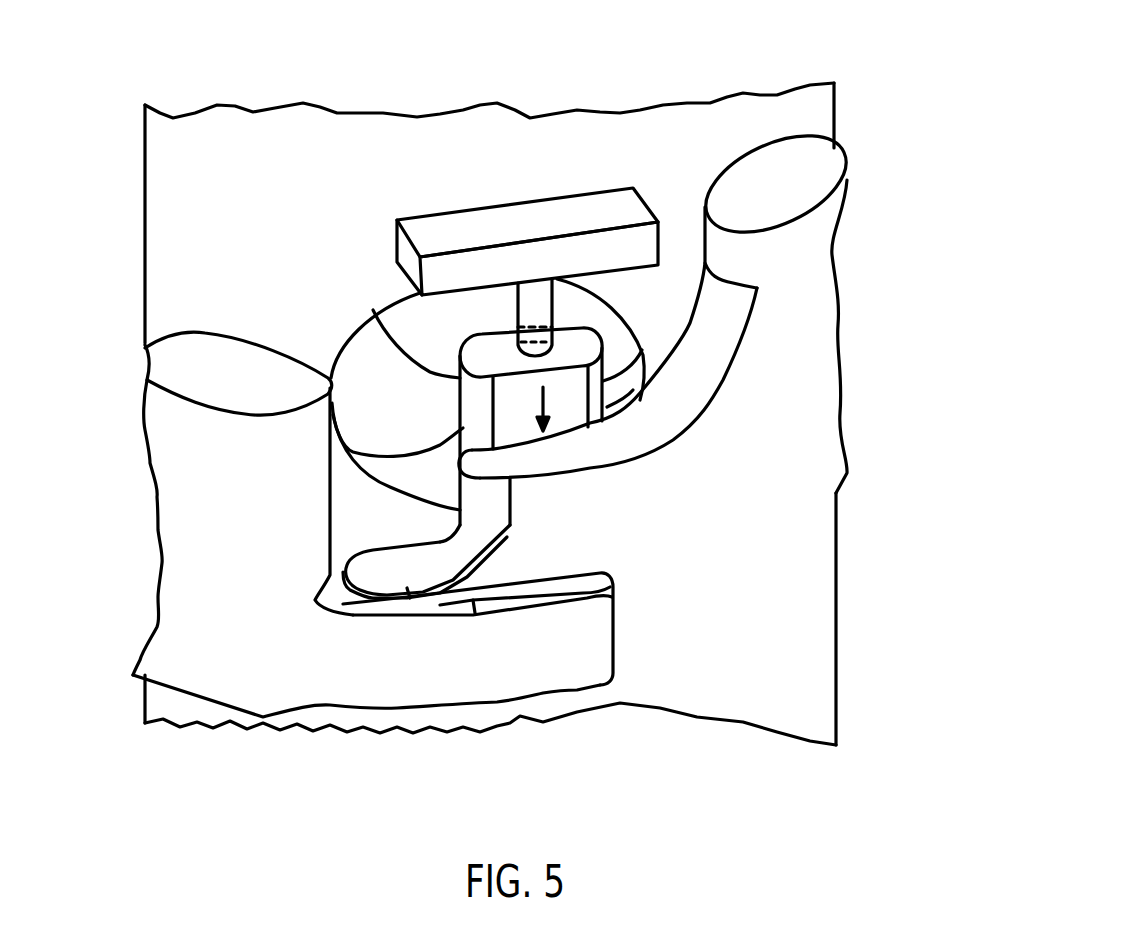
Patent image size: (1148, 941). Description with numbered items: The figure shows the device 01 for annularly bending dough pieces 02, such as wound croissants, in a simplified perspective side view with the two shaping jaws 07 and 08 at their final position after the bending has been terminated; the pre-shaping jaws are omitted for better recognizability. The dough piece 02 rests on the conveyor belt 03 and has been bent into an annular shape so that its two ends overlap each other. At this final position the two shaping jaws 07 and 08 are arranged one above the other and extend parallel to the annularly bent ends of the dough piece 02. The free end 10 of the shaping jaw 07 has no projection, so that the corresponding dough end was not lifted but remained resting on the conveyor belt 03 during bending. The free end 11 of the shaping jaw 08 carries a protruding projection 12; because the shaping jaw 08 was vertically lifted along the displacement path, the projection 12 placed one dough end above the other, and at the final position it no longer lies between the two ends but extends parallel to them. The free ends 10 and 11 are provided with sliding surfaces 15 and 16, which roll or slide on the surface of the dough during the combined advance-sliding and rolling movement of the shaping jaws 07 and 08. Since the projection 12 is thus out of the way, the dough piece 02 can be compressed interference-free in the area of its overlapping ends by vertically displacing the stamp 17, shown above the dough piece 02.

The device 01 is at (720, 68).
The dough piece 02 is at (353, 349).
The conveyor belt 03 is at (823, 647).
The shaping jaw 07 is at (178, 527).
The shaping jaw 08 is at (828, 378).
The free end 10 is at (598, 652).
The free end 11 is at (503, 508).
The projection 12 is at (392, 575).
The sliding surface 15 is at (620, 613).
The sliding surface 16 is at (449, 492).
The stamp 17 is at (630, 350).